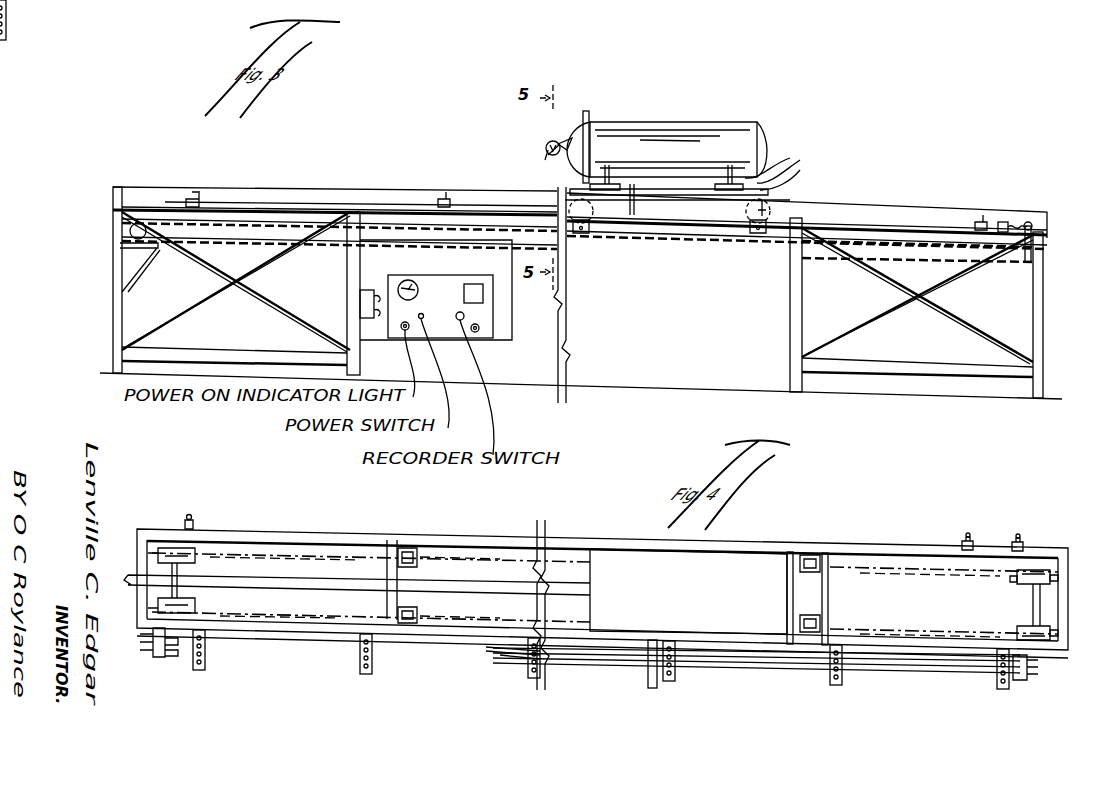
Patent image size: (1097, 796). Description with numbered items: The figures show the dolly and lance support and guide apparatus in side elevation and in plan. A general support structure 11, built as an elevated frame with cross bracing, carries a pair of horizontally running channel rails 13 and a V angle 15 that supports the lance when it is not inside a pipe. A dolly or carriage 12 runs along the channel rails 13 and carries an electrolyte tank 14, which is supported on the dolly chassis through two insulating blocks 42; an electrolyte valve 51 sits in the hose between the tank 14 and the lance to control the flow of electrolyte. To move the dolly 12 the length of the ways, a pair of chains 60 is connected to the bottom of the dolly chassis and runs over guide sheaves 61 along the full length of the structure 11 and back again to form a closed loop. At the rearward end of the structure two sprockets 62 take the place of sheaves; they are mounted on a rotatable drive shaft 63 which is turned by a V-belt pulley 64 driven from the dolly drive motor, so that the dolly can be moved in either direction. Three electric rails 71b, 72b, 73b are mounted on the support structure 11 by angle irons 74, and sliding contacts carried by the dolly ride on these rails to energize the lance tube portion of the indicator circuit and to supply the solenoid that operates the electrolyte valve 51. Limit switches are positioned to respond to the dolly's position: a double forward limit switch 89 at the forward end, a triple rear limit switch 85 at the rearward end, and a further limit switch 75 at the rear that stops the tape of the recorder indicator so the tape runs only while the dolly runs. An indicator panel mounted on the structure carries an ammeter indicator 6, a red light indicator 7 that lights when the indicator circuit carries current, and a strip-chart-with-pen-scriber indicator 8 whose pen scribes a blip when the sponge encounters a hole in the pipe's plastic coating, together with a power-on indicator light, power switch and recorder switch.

In FIG. 3, the ammeter indicator 6 is at (408, 280).
In FIG. 3, the red light indicator 7 is at (480, 326).
In FIG. 3, the strip-chart-with-pen-scriber indicator 8 is at (473, 284).
In FIG. 3, the dolly or carriage support structure 11 is at (910, 366).
In FIG. 3, the dolly or carriage 12 is at (770, 195).
In FIG. 4, the dolly or carriage 12 is at (700, 601).
In FIG. 3, the channel rails 13 is at (948, 214).
In FIG. 4, the channel rails 13 is at (576, 546).
In FIG. 3, the electrolyte tank 14 is at (672, 122).
In FIG. 4, the V angle (V way or support) 15 is at (360, 580).
In FIG. 3, the insulating blocks 42 is at (780, 160).
In FIG. 3, the electrolyte valve 51 is at (545, 155).
In FIG. 3, the chains 60 is at (272, 223).
In FIG. 4, the chains 60 is at (280, 556).
In FIG. 3, the guide sheaves 61 is at (120, 221).
In FIG. 4, the guide sheaves 61 is at (193, 565).
In FIG. 3, the sprockets 62 is at (1022, 256).
In FIG. 4, the sprockets 62 is at (1052, 630).
In FIG. 4, the drive shaft 63 is at (1034, 606).
In FIG. 4, the V-belt pulley 64 is at (1050, 575).
In FIG. 3, the electric rail 71b is at (245, 202).
In FIG. 4, the electric rail 71b is at (572, 676).
In FIG. 4, the electric rail 72b is at (497, 660).
In FIG. 4, the electric rail 73b is at (463, 652).
In FIG. 3, the angle irons 74 is at (196, 195).
In FIG. 4, the angle irons 74 is at (362, 675).
In FIG. 4, the limit switch 75 is at (1036, 570).
In FIG. 4, the triple rear limit switch 85 is at (967, 534).
In FIG. 4, the double forward limit switch 89 is at (189, 516).